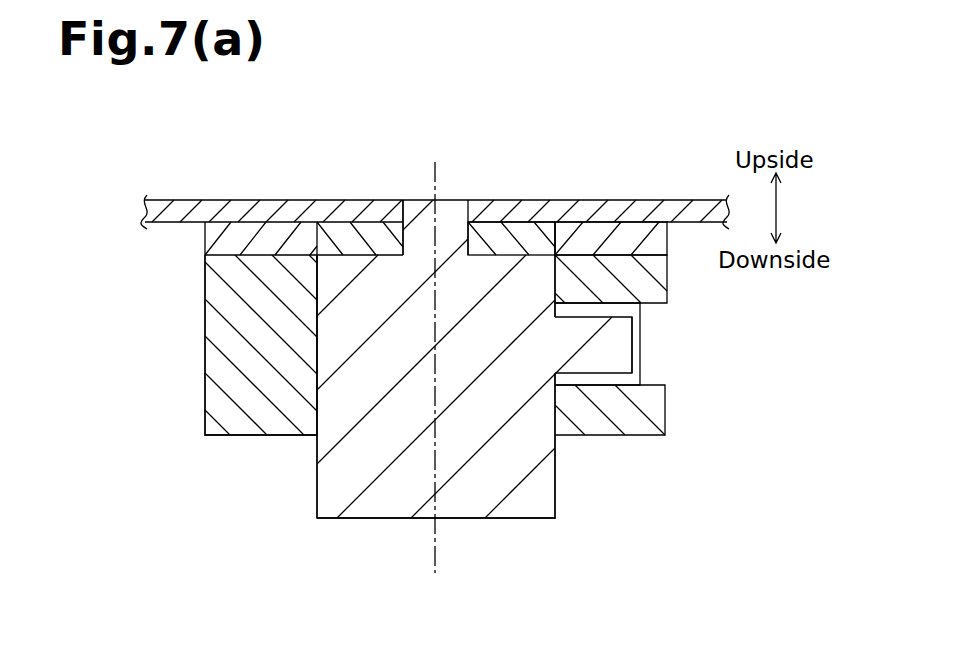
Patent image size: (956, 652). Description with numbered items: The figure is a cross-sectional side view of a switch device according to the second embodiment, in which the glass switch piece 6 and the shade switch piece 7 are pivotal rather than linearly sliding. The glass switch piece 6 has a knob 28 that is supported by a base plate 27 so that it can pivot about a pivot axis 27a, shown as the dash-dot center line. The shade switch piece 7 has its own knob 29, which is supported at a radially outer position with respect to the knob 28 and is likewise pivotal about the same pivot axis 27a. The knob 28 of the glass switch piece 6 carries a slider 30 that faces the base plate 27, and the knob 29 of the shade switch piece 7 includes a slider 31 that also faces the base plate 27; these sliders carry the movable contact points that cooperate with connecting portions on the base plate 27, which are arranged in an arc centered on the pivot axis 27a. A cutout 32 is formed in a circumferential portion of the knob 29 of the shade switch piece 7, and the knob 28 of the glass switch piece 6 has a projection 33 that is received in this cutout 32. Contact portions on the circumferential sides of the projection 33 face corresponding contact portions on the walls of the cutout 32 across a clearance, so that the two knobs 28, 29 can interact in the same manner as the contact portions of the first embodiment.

The base plate 27 is at (368, 210).
The pivot axis 27a is at (436, 164).
The knob 28 is at (508, 520).
The knob 29 is at (279, 436).
The slider 30 is at (527, 228).
The slider 31 is at (588, 228).
The cutout 32 is at (640, 306).
The projection 33 is at (627, 358).
The shade switch piece 7 is at (205, 437).
The glass switch piece 6 is at (378, 520).